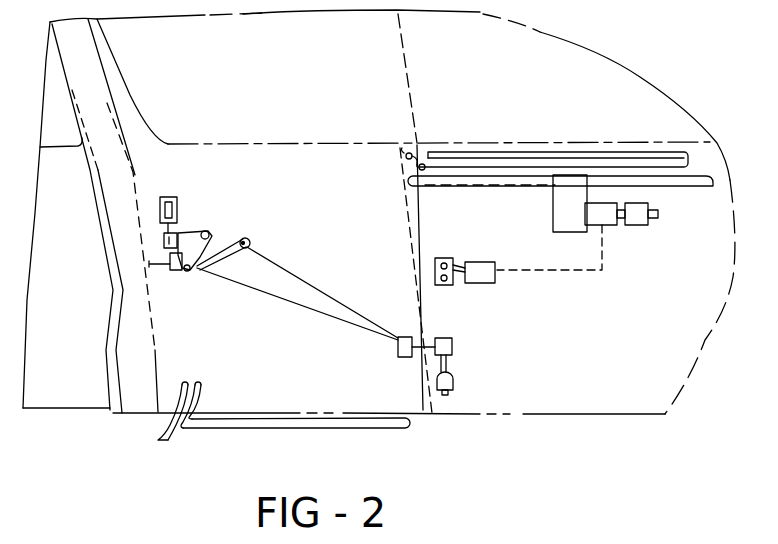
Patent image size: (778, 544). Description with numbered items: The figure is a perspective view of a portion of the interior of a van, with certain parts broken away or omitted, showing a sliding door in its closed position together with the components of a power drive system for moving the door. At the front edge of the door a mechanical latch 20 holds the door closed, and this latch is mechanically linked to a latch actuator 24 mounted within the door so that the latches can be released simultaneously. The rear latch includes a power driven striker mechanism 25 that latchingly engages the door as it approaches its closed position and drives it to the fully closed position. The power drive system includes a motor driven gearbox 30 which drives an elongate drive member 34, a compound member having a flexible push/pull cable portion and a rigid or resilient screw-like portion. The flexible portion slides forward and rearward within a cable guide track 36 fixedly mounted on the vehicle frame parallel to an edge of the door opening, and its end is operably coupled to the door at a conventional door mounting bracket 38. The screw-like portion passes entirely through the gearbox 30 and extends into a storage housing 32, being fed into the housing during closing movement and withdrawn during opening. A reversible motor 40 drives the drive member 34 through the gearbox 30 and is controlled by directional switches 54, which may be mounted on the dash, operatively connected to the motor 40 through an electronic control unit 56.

The mechanical latch 20 is at (178, 272).
The latch actuator 24 is at (187, 237).
The power driven striker mechanism 25 is at (452, 357).
The motor driven gearbox 30 is at (572, 182).
The storage housing 32 is at (703, 190).
The elongate drive member 34 is at (480, 185).
The cable guide track 36 is at (420, 158).
The door mounting bracket 38 is at (400, 148).
The motor 40 is at (630, 225).
The directional switches 54 is at (447, 285).
The electronic control unit 56 is at (495, 280).